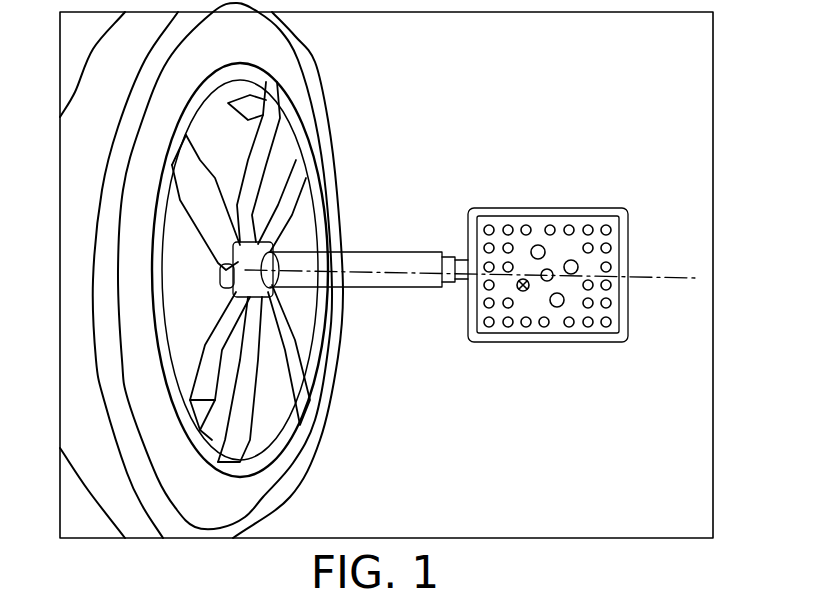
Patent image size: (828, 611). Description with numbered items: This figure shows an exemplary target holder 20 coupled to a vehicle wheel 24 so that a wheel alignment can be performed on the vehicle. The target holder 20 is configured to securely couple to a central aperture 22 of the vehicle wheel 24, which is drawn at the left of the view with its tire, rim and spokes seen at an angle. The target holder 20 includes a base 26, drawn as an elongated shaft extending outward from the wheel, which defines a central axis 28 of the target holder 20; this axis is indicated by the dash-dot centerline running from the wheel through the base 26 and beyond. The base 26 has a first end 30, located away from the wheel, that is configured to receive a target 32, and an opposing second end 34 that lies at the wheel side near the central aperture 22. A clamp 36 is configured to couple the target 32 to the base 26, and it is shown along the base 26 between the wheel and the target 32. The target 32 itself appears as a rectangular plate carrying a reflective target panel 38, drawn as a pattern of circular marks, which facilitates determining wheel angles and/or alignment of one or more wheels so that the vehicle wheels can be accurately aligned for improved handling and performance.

The target holder 20 is at (552, 250).
The central aperture 22 is at (257, 233).
The vehicle wheel 24 is at (274, 92).
The base 26 is at (390, 287).
The central axis 28 is at (650, 272).
The first end 30 is at (434, 304).
The target 32 is at (549, 327).
The second end 34 is at (264, 310).
The clamp 36 is at (409, 252).
The reflective target panel 38 is at (568, 243).